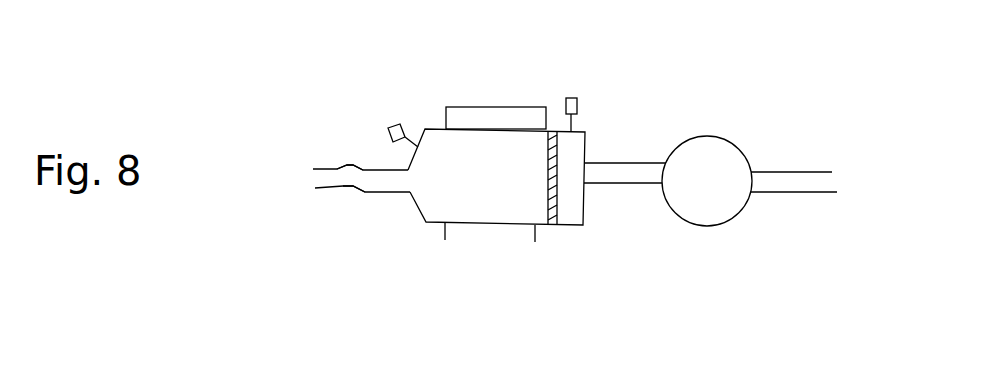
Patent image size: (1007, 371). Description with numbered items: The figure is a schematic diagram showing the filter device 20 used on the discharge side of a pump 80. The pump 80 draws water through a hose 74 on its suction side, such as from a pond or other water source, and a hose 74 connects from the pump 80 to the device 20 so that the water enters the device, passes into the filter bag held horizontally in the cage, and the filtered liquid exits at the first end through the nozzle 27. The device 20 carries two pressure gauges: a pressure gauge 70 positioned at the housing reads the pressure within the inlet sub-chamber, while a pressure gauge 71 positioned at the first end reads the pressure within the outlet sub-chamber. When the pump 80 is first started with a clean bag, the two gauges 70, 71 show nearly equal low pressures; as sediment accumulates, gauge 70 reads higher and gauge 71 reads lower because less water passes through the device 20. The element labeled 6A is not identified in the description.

The filter device 20 is at (518, 68).
The hose 74 is at (325, 168).
The nozzle 27 is at (369, 190).
The pressure gauge 71 is at (407, 110).
The pressure gauge 70 is at (578, 100).
The filter plate 6A is at (562, 227).
The pump 80 is at (730, 222).